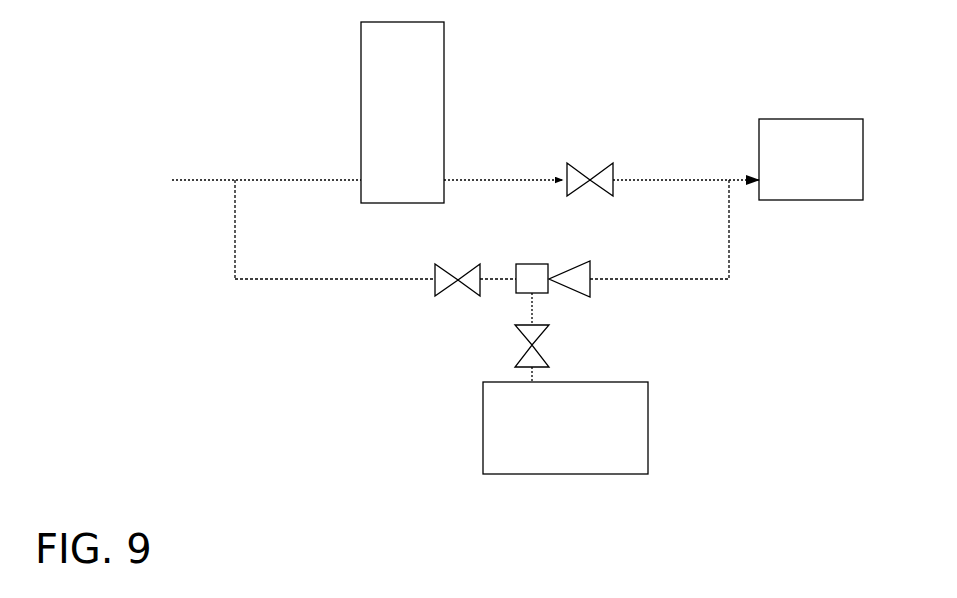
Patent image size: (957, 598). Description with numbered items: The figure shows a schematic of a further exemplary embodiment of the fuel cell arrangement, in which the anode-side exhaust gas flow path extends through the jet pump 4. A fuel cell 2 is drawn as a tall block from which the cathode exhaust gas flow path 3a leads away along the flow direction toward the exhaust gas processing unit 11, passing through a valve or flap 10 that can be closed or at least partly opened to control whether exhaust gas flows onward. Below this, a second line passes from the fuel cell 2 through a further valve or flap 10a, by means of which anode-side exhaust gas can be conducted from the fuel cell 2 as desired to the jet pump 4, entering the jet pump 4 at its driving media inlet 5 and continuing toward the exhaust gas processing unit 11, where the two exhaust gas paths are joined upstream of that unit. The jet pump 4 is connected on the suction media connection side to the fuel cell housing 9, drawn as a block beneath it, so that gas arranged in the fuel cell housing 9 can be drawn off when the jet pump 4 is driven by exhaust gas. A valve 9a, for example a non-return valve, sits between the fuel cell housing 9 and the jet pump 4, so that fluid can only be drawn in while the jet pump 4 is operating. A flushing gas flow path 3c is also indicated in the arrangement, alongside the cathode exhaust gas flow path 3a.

The fuel cell 2 is at (443, 103).
The cathode exhaust gas flow path 3a is at (673, 88).
The flushing gas flow path 3c is at (209, 268).
The jet pump 4 is at (541, 292).
The driving media inlet 5 is at (508, 265).
The fuel cell housing 9 is at (648, 429).
The valve 9a is at (525, 333).
The valve or flap 10 is at (578, 172).
The valve or flap 10a is at (437, 285).
The exhaust gas processing unit 11 is at (793, 119).